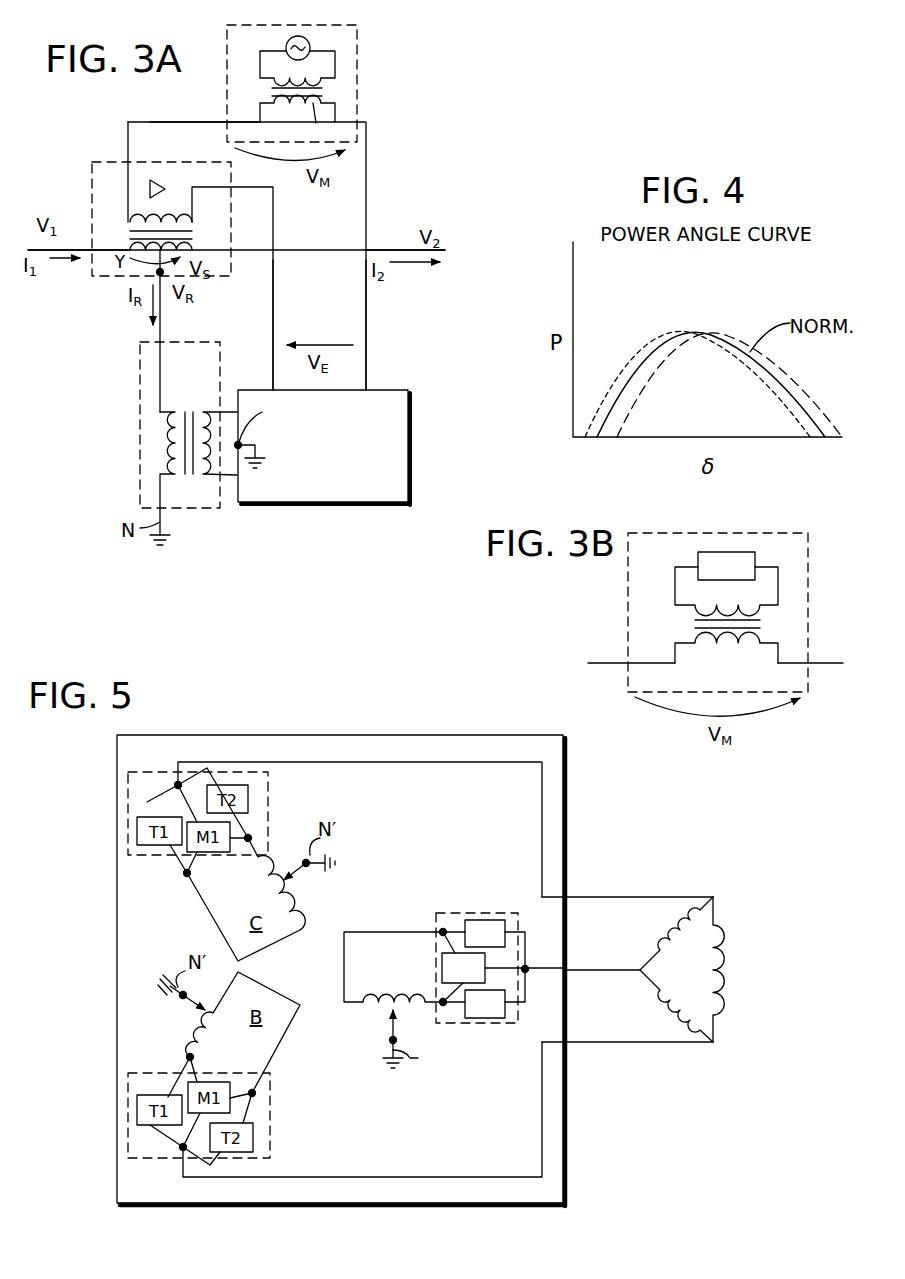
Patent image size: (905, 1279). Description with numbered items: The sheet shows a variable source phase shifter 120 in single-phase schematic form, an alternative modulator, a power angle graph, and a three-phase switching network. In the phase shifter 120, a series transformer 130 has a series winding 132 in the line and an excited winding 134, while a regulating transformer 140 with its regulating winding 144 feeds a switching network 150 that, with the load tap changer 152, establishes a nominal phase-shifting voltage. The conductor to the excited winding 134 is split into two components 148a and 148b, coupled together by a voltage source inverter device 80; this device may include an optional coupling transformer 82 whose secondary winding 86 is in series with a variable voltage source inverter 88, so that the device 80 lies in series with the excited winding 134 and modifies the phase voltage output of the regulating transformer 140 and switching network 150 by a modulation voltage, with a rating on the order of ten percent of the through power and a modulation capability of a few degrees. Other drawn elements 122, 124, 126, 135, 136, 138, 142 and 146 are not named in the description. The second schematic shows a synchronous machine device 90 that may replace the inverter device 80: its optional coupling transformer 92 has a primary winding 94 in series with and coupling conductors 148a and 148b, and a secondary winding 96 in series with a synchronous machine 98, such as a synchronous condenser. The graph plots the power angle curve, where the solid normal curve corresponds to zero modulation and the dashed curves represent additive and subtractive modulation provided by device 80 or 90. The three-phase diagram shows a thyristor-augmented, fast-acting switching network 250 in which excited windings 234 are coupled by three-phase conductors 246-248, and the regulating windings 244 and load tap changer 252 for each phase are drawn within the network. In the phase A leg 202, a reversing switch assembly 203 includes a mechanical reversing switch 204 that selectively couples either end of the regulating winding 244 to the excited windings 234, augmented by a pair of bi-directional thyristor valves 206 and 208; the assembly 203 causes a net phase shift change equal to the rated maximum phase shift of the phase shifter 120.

In FIG. 3A, the voltage source inverter device 80 is at (357, 80).
In FIG. 3A, the three-phase coupling transformer 82 is at (340, 99).
In FIG. 3A, the coupling transformer secondary winding 86 is at (300, 86).
In FIG. 3A, the variable voltage source inverter 88 is at (310, 44).
In FIG. 3A, the variable source phase shifter 120 is at (72, 396).
In FIG. 3A, the first bus terminal 122 is at (46, 250).
In FIG. 3A, the transmission line section 124 is at (78, 250).
In FIG. 3A, the second bus terminal 126 is at (390, 250).
In FIG. 3A, the series transformer 130 is at (92, 272).
In FIG. 3A, the series winding 132 is at (115, 242).
In FIG. 3A, the excited winding 134 is at (130, 222).
In FIG. 3A, the polarity indicator 135 is at (172, 186).
In FIG. 3A, the tap connection 136 is at (158, 268).
In FIG. 3A, the conductor to shunt transformer 138 is at (162, 327).
In FIG. 3A, the regulating transformer 140 is at (148, 483).
In FIG. 3A, the shunt transformer primary winding 142 is at (172, 432).
In FIG. 3A, the regulating winding 144 is at (205, 478).
In FIG. 3A, the conductor 146 is at (273, 283).
In FIG. 3A, the conductor component 148a is at (366, 310).
In FIG. 3B, the conductor component 148a is at (830, 663).
In FIG. 3A, the conductor component 148b is at (195, 122).
In FIG. 3B, the conductor component 148b is at (595, 663).
In FIG. 3A, the switching network 150 is at (360, 497).
In FIG. 3A, the load tap changer 152 is at (216, 453).
In FIG. 3B, the variable source synchronous machine device 90 is at (755, 538).
In FIG. 3B, the three-phase coupling transformer 92 is at (672, 622).
In FIG. 3B, the primary winding 94 is at (725, 646).
In FIG. 3B, the secondary winding 96 is at (708, 608).
In FIG. 3B, the synchronous machine 98 is at (755, 556).
In FIG. 5, the phase A leg 202 is at (472, 954).
In FIG. 5, the thyristor-augmented reversing switch assembly 203 is at (460, 1023).
In FIG. 5, the reversing switch 204 is at (441, 968).
In FIG. 5, the bi-directional thyristor valve 206 is at (498, 920).
In FIG. 5, the bi-directional thyristor valve 208 is at (493, 1018).
In FIG. 5, the excited windings 234 is at (700, 868).
In FIG. 5, the regulating windings 244 is at (365, 1005).
In FIG. 5, the three-phase conductors 246-248 is at (645, 1052).
In FIG. 5, the switching network 250 is at (500, 1192).
In FIG. 5, the load tap changer 252 is at (390, 1030).